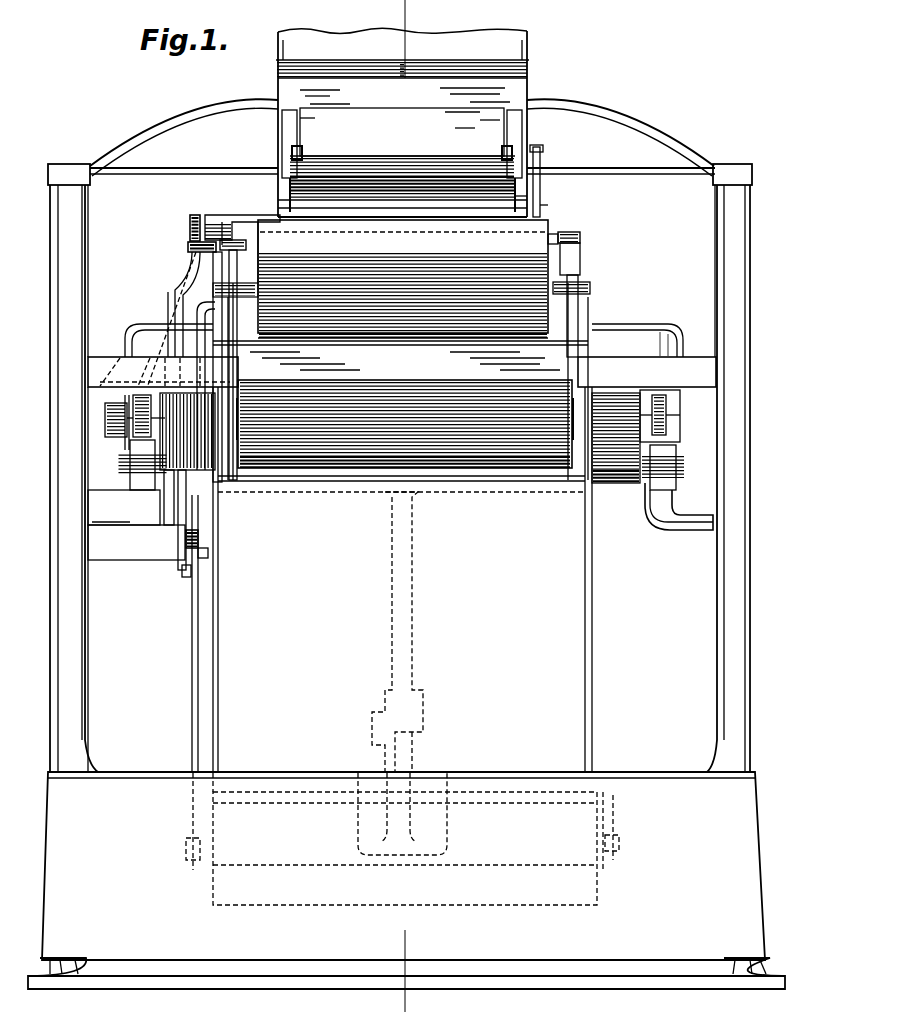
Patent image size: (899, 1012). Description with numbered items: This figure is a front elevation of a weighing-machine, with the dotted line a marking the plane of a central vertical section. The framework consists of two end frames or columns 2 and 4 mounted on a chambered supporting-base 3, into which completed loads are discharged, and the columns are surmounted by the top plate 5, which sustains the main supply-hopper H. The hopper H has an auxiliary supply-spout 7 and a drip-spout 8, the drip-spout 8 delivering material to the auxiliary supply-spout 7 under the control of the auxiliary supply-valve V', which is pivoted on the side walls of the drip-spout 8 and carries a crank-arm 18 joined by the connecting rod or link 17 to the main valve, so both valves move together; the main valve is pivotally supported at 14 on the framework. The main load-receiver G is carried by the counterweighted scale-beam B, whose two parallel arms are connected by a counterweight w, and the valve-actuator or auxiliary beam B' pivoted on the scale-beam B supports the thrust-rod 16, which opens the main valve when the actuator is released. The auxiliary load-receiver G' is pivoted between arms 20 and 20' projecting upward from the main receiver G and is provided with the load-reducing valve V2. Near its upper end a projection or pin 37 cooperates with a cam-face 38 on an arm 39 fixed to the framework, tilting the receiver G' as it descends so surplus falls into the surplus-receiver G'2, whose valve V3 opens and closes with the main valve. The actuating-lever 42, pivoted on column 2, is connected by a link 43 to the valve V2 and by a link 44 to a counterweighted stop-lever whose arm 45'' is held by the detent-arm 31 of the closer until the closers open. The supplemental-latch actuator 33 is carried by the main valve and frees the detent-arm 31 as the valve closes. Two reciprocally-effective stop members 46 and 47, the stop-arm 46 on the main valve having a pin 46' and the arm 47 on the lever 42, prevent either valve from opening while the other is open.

The section line a is at (375, 17).
The main supply-hopper H is at (402, 122).
The drip-spout 8 is at (397, 146).
The auxiliary supply-valve V' is at (402, 162).
The crank-arm 18 is at (541, 150).
The auxiliary supply-spout 7 is at (528, 206).
The connecting rod or link 17 is at (541, 212).
The top plate 5 is at (402, 137).
The end frame or column 2 is at (56, 626).
The end frame or column 4 is at (715, 594).
The chambered supporting-base 3 is at (406, 880).
The main load-receiver G is at (375, 632).
The auxiliary load-receiver G' is at (403, 279).
The load-reducing valve V2 is at (381, 338).
The surplus-receiver G'2 is at (405, 414).
The surplus-receiver valve V3 is at (495, 470).
The pivotal support of main valve 14 is at (244, 212).
The cam-face 38 is at (226, 224).
The projection or pin 37 is at (232, 251).
The arm 39 is at (236, 330).
The stop member 46 is at (181, 216).
The stop member 47 is at (196, 236).
The pin or projection 46' is at (177, 248).
The thrust-rod 16 is at (180, 292).
The actuating-lever 42 is at (168, 296).
The arm 20 is at (169, 367).
The arm 20' is at (636, 332).
The scale-beam B is at (402, 403).
The valve-actuator or auxiliary beam B' is at (106, 465).
The counterweight w is at (621, 490).
The link 44 is at (176, 502).
The supplemental-latch actuator 33 is at (198, 505).
The link 43 is at (184, 522).
The arm of stop-lever 45'' is at (179, 583).
The detent-arm 31 is at (192, 673).